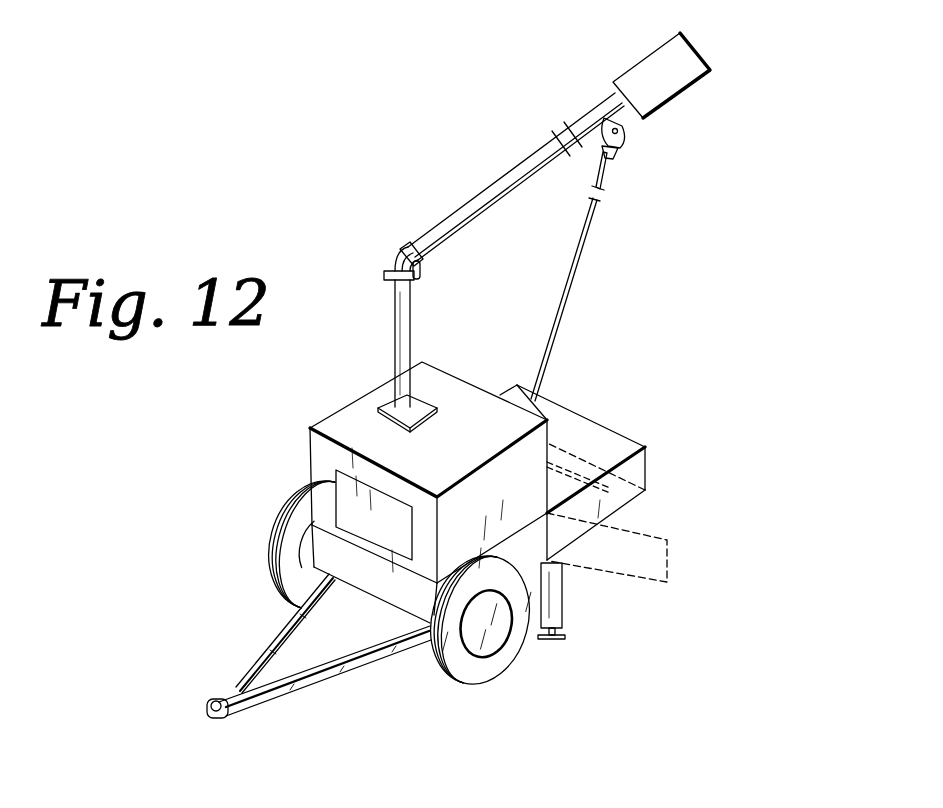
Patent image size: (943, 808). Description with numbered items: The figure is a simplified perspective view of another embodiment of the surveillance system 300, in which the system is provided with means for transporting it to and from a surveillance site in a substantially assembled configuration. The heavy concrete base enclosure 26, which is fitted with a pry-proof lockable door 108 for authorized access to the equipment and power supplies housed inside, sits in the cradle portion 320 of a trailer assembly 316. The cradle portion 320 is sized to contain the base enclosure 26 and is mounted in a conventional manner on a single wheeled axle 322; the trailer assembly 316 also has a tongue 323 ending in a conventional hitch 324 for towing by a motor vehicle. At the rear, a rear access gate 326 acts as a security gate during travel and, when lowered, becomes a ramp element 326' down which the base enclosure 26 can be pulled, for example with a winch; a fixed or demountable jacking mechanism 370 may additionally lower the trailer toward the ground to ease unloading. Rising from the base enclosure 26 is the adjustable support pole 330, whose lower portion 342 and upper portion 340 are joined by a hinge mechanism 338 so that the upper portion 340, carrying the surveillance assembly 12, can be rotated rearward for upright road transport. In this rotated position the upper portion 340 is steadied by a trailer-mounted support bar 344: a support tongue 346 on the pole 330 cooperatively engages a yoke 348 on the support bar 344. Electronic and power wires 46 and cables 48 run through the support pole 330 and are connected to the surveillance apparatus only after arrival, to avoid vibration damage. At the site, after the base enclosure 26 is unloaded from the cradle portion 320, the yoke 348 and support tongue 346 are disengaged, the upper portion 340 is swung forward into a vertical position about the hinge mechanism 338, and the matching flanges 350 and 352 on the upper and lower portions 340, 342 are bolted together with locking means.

The surveillance assembly 12 is at (630, 44).
The surveillance system 300 is at (352, 146).
The lower portion of the support pole 342 is at (421, 126).
The adjustable support pole 330 is at (525, 150).
The upper portion of the support pole 340 is at (510, 193).
The support tongue 346 is at (612, 127).
The yoke 348 is at (612, 150).
The support bar 344 is at (588, 240).
The flange 350 is at (405, 245).
The hinge mechanism 338 is at (421, 268).
The cables 48 is at (400, 258).
The flange 352 is at (383, 276).
The wires 46 is at (394, 266).
The base enclosure 26 is at (342, 418).
The lockable door 108 is at (347, 502).
The rear access gate 326 is at (602, 472).
The ramp element 326' is at (638, 547).
The jacking mechanism 370 is at (565, 605).
The cradle portion 320 is at (390, 603).
The single wheeled axle 322 is at (505, 663).
The trailer assembly 316 is at (380, 671).
The tongue 323 is at (253, 658).
The hitch 324 is at (210, 697).